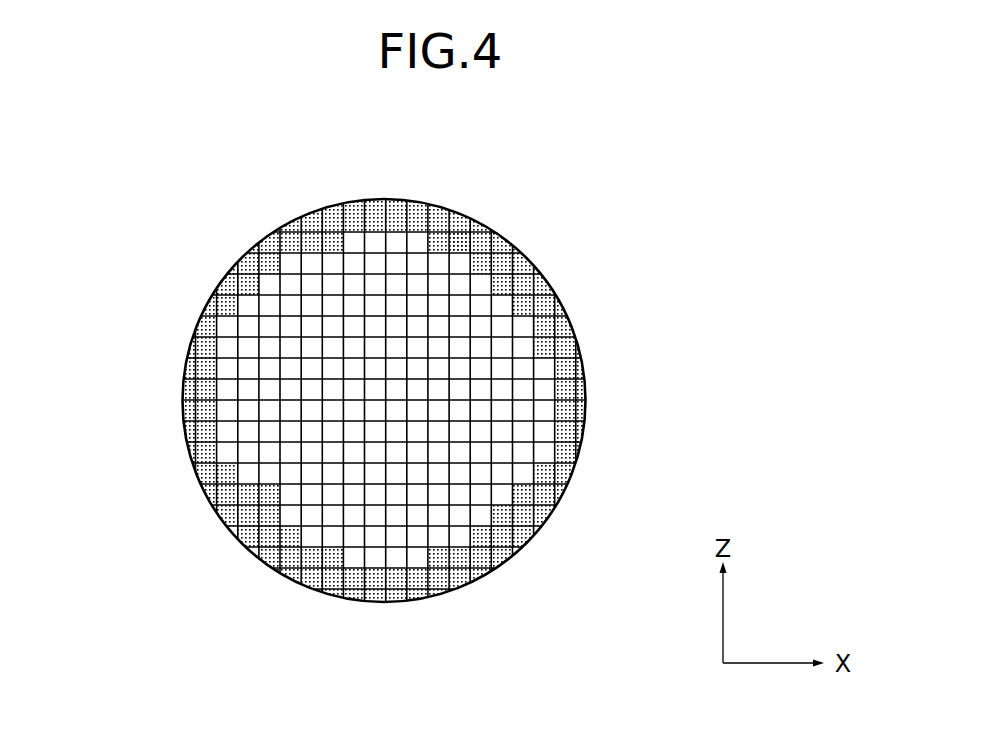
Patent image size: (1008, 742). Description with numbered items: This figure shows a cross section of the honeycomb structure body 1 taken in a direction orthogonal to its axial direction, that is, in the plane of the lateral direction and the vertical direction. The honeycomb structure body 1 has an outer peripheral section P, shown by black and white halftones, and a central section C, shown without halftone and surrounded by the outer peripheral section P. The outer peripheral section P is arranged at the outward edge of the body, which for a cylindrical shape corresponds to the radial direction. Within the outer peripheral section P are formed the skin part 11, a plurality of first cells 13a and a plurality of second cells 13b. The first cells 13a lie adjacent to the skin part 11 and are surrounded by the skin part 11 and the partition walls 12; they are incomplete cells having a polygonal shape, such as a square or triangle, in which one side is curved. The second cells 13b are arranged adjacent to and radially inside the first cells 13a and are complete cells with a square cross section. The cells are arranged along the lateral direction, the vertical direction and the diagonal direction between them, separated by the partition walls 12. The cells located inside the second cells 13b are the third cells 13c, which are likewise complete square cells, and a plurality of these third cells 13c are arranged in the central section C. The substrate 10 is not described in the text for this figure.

The honeycomb structure body 1 is at (253, 227).
The substrate wafer 10 is at (375, 448).
The skin part 11 is at (583, 448).
The partition walls 12 is at (337, 318).
The first cells 13a is at (417, 200).
The second cells 13b is at (248, 303).
The third cells 13c is at (480, 348).
The outer peripheral section P is at (460, 241).
The central section C is at (316, 388).